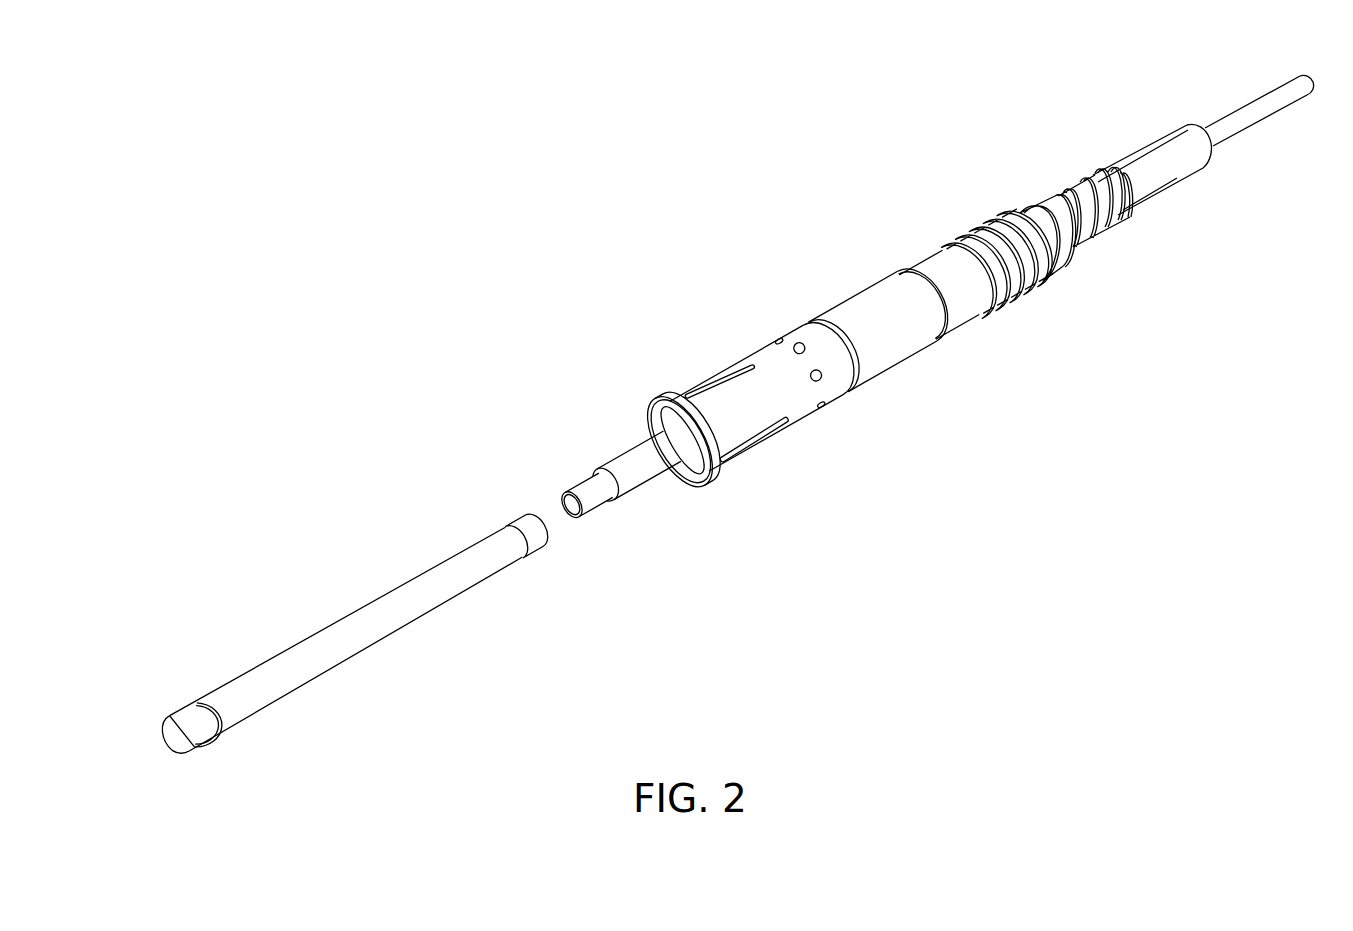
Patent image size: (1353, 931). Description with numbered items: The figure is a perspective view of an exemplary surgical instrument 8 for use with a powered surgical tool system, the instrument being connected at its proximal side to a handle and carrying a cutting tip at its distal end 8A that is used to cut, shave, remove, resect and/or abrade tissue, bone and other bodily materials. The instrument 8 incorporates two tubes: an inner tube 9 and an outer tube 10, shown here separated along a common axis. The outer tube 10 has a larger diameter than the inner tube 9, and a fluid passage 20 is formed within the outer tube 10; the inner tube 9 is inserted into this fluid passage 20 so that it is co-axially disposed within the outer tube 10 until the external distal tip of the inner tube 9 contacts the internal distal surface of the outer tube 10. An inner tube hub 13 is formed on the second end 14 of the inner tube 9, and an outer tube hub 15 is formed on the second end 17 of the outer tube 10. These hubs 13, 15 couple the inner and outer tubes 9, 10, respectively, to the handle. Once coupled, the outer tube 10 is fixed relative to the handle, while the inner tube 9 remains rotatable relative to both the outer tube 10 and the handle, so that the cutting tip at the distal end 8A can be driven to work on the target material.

The surgical instrument 8 is at (928, 371).
The distal end 8A is at (175, 712).
The inner tube 9 is at (519, 521).
The outer tube 10 is at (345, 619).
The inner tube hub 13 is at (1136, 174).
The second end of the inner tube 14 is at (1240, 108).
The outer tube hub 15 is at (862, 316).
The second end of the outer tube 17 is at (978, 230).
The fluid passage 20 is at (598, 471).